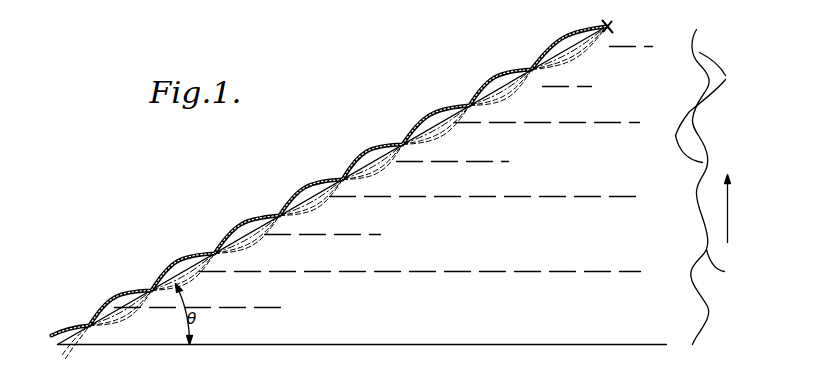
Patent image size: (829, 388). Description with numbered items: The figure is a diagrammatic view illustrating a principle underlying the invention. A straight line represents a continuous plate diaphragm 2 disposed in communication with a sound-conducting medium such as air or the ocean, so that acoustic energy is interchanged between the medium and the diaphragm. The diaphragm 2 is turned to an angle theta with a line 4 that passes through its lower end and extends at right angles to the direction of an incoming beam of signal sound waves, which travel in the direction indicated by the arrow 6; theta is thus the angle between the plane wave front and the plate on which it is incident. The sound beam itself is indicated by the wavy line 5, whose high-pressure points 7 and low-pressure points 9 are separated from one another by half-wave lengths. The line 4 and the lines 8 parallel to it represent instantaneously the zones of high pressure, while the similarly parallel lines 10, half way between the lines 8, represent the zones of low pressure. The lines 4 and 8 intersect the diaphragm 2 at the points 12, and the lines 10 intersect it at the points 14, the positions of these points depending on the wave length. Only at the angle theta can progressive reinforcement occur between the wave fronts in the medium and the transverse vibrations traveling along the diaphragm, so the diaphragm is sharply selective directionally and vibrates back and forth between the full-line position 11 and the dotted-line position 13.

The diaphragm 2 is at (303, 193).
The line 4 is at (467, 347).
The wavy line 5 is at (725, 267).
The arrow 6 is at (731, 208).
The high-pressure points 7 is at (707, 187).
The lines 8 is at (641, 271).
The low-pressure points 9 is at (676, 136).
The lines 10 is at (282, 308).
The full-line position 11 is at (175, 262).
The points 12 is at (57, 349).
The dotted-line position 13 is at (196, 279).
The points 14 is at (124, 303).